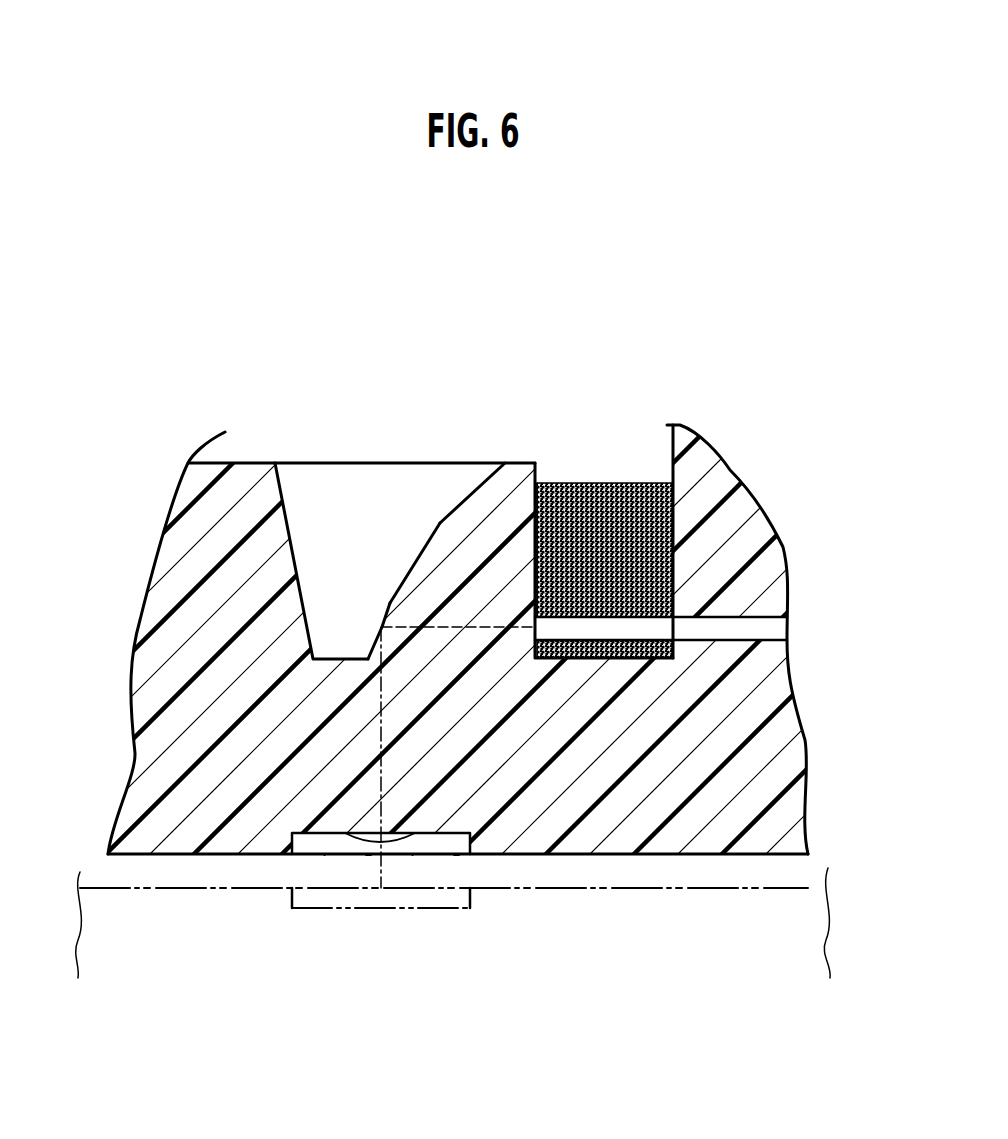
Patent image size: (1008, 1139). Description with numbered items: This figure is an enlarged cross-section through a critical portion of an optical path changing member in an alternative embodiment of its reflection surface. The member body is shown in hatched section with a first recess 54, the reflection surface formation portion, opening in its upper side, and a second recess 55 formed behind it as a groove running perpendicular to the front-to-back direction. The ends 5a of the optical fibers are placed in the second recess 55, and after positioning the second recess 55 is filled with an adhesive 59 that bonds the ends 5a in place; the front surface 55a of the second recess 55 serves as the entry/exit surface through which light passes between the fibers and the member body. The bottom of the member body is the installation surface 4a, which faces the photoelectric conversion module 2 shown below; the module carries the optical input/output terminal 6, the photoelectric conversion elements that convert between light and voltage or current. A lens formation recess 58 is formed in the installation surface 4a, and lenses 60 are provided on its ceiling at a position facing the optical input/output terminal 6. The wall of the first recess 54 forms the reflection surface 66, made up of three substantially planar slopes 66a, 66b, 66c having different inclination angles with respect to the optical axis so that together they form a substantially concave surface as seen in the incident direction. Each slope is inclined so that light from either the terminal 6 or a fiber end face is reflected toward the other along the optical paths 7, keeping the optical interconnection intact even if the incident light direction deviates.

The photoelectric conversion module 2 is at (817, 873).
The installation surface 4a is at (703, 855).
The ends of optical fibers 5a is at (617, 627).
The optical input/output terminal 6 is at (448, 910).
The optical paths 7 is at (380, 868).
The first recess 54 is at (313, 492).
The second recess 55 is at (617, 500).
The front surface of the second recess 55a is at (538, 527).
The lens formation recess 58 is at (323, 833).
The adhesive 59 is at (657, 537).
The lenses 60 is at (403, 837).
The reflection surface 66 is at (431, 462).
The slope 66a is at (388, 620).
The slope 66b is at (418, 563).
The slope 66c is at (475, 426).